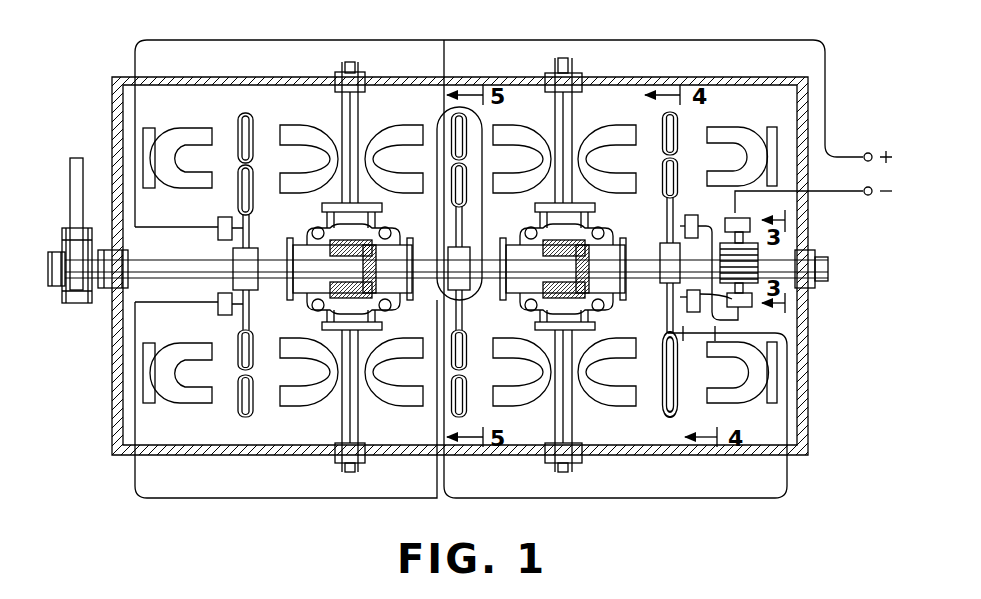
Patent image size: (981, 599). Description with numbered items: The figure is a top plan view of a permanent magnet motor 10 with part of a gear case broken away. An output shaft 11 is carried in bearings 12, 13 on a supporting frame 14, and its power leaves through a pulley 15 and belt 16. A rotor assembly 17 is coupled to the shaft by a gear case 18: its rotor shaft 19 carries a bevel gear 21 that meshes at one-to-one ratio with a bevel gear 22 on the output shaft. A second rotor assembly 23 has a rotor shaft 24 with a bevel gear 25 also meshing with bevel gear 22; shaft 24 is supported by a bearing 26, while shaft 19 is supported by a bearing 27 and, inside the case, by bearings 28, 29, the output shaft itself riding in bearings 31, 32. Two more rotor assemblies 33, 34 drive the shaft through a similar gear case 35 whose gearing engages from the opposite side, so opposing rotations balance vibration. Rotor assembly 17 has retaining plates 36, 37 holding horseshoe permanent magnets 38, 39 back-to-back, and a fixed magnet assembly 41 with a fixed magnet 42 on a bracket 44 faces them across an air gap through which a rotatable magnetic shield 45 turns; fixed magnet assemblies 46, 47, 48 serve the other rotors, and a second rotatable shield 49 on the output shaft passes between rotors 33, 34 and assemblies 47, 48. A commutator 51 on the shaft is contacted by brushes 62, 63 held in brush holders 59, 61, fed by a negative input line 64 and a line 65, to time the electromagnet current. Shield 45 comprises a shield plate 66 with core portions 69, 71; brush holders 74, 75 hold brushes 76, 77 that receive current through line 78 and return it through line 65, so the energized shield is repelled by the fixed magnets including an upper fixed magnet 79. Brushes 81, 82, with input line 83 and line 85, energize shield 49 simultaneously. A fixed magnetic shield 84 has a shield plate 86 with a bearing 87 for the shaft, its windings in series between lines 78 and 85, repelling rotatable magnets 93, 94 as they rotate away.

The main shaft 10 is at (446, 269).
The output shaft 11 is at (54, 258).
The bearing 12 is at (108, 290).
The bearing 13 is at (812, 280).
The supporting frame 14 is at (118, 380).
The pulley 15 is at (65, 298).
The belt 16 is at (74, 202).
The rotor assembly 17 is at (620, 425).
The gear case 18 is at (596, 222).
The rotor shaft 19 is at (565, 474).
The bevel gear 21 is at (542, 300).
The bevel gear 22 is at (530, 290).
The rotor assembly 23 is at (588, 118).
The rotor shaft 24 is at (572, 64).
The bevel gear 25 is at (548, 248).
The bearing 26 is at (548, 73).
The bearing 27 is at (550, 456).
The bearing 28 is at (598, 294).
The bearing 29 is at (585, 318).
The bearing 31 is at (520, 254).
The bearing 32 is at (613, 248).
The rotor assembly 33 is at (375, 116).
The rotor assembly 34 is at (330, 425).
The gear case 35 is at (305, 225).
The retaining plate 36 is at (584, 406).
The retaining plate 37 is at (498, 338).
The horseshoe-shaped permanent magnet 38 is at (538, 356).
The horseshoe-shaped permanent magnet 39 is at (588, 356).
The fixed magnet assembly 41 is at (748, 412).
The horseshoe-shaped permanent magnet 42 is at (741, 354).
The bracket 44 is at (780, 390).
The magnetic shield 45 is at (664, 425).
The fixed magnet assembly 46 is at (728, 124).
The fixed magnet assembly 47 is at (187, 124).
The fixed magnet assembly 48 is at (180, 425).
The magnetic shield 49 is at (242, 110).
The commutator 51 is at (768, 262).
The brush holder 59 is at (748, 219).
The brush holder 61 is at (750, 303).
The brush 62 is at (733, 240).
The brush 63 is at (709, 290).
The input line 64 is at (853, 195).
The line 65 is at (733, 322).
The shield plate 66 is at (672, 333).
The electromagnet core portion 69 is at (672, 180).
The electromagnet core portion 71 is at (668, 136).
The brush holder 74 is at (680, 294).
The brush holder 75 is at (691, 213).
The brush 76 is at (676, 300).
The brush 77 is at (682, 226).
The line 78 is at (790, 490).
The upper fixed magnet 79 is at (742, 134).
The brush 81 is at (228, 217).
The brush 82 is at (232, 312).
The input line 83 is at (667, 40).
The fixed magnetic shield 84 is at (432, 102).
The line 85 is at (265, 498).
The shield plate 86 is at (473, 160).
The bearing 87 is at (450, 250).
The rotatable magnet 93 is at (372, 386).
The rotatable magnet 94 is at (372, 147).